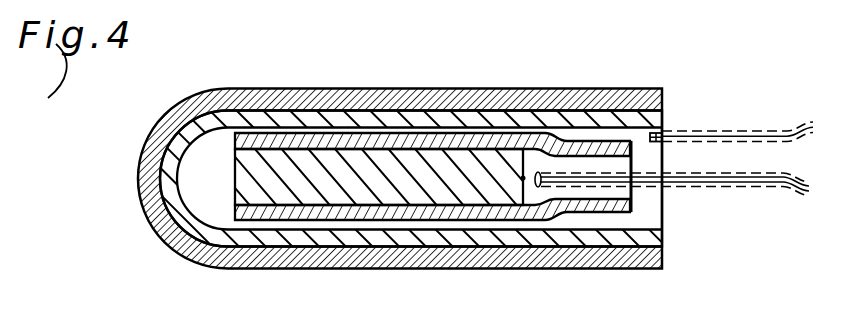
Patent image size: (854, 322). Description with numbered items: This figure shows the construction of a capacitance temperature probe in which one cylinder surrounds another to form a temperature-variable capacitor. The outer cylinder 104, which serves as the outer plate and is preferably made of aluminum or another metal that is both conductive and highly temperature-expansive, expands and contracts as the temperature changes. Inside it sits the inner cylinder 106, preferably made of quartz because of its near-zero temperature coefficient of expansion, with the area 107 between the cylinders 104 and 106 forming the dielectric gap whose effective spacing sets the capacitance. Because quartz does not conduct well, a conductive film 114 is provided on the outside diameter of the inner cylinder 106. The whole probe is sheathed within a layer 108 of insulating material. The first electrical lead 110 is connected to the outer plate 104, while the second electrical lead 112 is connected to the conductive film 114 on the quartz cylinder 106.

The outer cylinder 104 is at (666, 117).
The inner cylinder 106 is at (600, 213).
The area between the cylinders 107 is at (223, 172).
The layer of insulating material 108 is at (568, 89).
The first electrical lead 110 is at (723, 132).
The second electrical lead 112 is at (747, 183).
The conductive film 114 is at (386, 177).